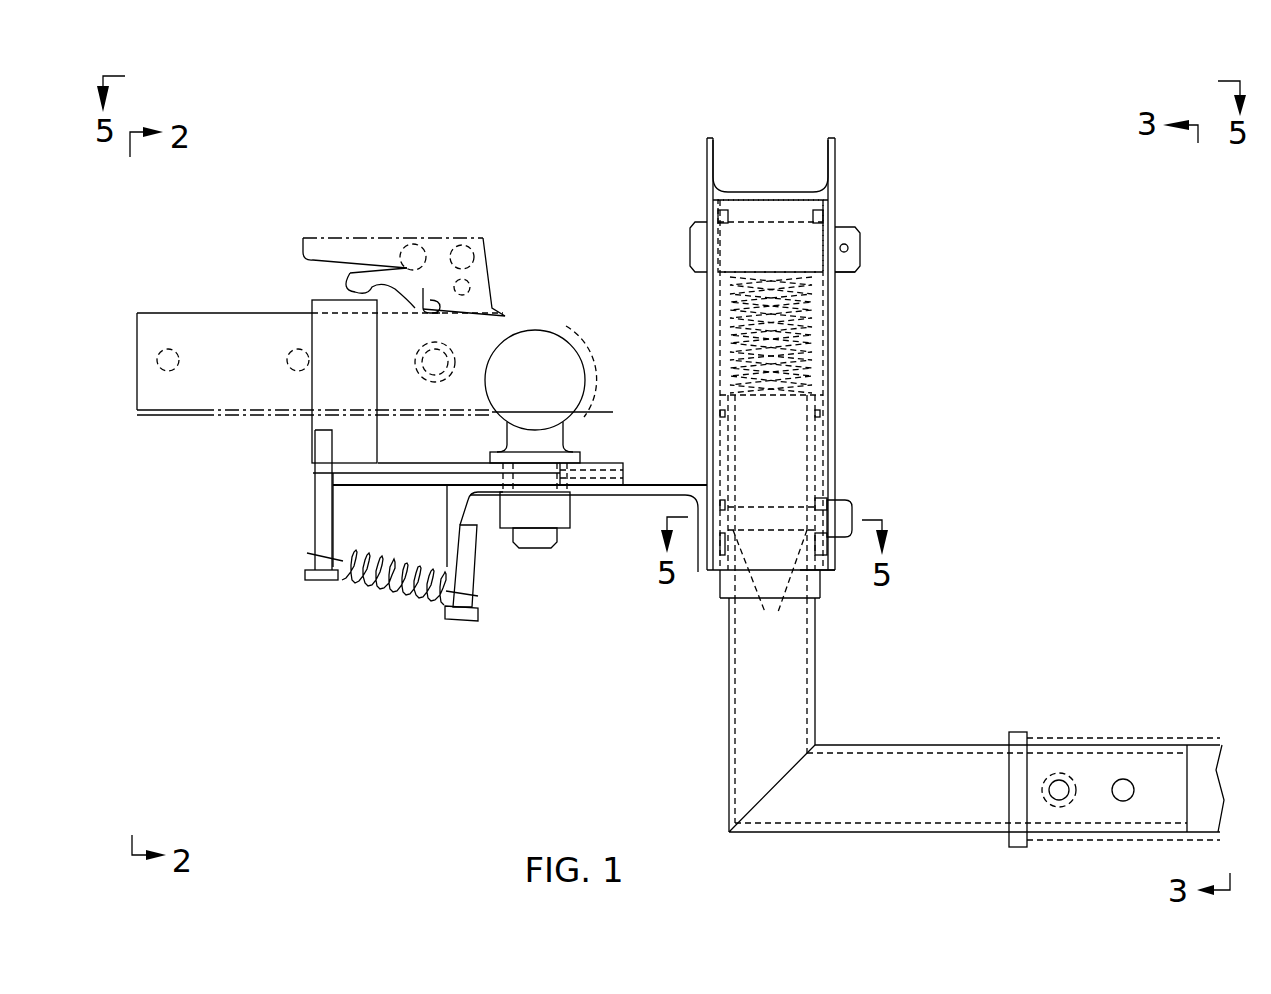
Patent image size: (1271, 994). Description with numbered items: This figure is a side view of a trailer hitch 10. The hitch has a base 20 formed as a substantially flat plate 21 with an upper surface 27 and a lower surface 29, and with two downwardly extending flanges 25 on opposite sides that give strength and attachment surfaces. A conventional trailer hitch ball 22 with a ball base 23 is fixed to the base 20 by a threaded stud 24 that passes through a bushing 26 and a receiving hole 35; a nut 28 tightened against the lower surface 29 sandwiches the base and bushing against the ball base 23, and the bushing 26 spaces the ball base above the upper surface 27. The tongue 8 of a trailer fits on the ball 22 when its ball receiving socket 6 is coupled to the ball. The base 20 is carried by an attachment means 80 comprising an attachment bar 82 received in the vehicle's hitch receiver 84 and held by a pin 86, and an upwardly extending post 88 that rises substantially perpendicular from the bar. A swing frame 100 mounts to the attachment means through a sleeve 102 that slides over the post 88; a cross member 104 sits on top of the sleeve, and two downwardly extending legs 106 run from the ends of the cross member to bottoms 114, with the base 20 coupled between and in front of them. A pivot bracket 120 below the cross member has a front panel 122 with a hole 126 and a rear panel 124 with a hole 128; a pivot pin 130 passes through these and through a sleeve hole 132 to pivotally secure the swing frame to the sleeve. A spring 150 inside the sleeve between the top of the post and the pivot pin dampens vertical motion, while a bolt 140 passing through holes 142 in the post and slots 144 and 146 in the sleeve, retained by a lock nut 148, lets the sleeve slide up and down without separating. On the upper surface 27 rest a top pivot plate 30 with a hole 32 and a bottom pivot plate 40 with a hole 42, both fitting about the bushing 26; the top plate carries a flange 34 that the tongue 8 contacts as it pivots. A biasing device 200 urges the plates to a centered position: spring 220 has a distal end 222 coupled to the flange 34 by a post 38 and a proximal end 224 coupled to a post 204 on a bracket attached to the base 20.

The ball receiving socket 6 is at (540, 302).
The tongue 8 is at (245, 315).
The trailer hitch 10 is at (452, 156).
The base 20 is at (636, 497).
The flat plate 21 is at (693, 480).
The trailer hitch ball 22 is at (568, 342).
The ball base 23 is at (560, 453).
The threaded stud 24 is at (537, 549).
The downwardly extending flanges 25 is at (457, 520).
The bushing 26 is at (476, 465).
The upper surface 27 is at (685, 480).
The nut 28 is at (500, 527).
The lower surface 29 is at (616, 497).
The top pivot plate 30 is at (440, 462).
The hole 32 is at (620, 463).
The flange 34 is at (316, 326).
The receiving hole 35 is at (585, 497).
The post 38 is at (315, 507).
The bottom pivot plate 40 is at (363, 480).
The hole 42 is at (625, 478).
The attachment means 80 is at (939, 671).
The attachment bar 82 is at (893, 750).
The hitch receiver 84 is at (1117, 737).
The pin 86 is at (1059, 785).
The upwardly extending post 88 is at (733, 698).
The swing frame 100 is at (880, 145).
The sleeve 102 is at (817, 587).
The cross member 104 is at (718, 165).
The downwardly extending legs 106 is at (835, 438).
The bottoms 114 is at (833, 563).
The pivot bracket 120 is at (793, 210).
The front panel 122 is at (705, 213).
The rear panel 124 is at (827, 213).
The hole 126 is at (700, 247).
The hole 128 is at (860, 265).
The pivot pin 130 is at (858, 243).
The sleeve hole 132 is at (760, 217).
The bolt 140 is at (765, 508).
The holes 142 is at (770, 585).
The slot 144 is at (723, 483).
The slot 146 is at (822, 413).
The lock nut 148 is at (848, 503).
The spring 150 is at (818, 348).
The biasing device 200 is at (375, 605).
The post 204 is at (462, 622).
The spring 220 is at (400, 596).
The distal end 222 is at (305, 556).
The proximal end 224 is at (472, 584).